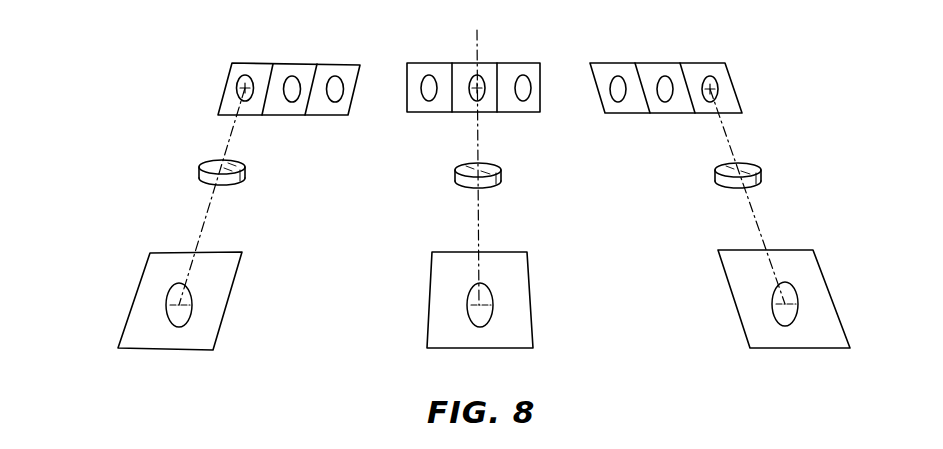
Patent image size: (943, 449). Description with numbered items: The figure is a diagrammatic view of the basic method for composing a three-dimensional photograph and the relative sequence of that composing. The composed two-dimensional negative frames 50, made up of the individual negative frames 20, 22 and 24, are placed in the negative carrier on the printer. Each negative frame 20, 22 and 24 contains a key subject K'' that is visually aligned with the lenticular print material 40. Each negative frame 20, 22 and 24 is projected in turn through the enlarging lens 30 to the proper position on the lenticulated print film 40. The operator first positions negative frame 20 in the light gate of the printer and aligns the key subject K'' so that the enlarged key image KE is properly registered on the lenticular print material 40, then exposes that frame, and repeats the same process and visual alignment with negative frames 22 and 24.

The negative frame 20 is at (233, 75).
The negative frame 22 is at (298, 63).
The negative frame 24 is at (347, 63).
The enlarging lens 30 is at (245, 178).
The lenticular print material 40 is at (207, 330).
The two-dimensional negative frames 50 is at (228, 103).
The key subject K'' is at (475, 132).
The enlarged key image KE is at (193, 298).